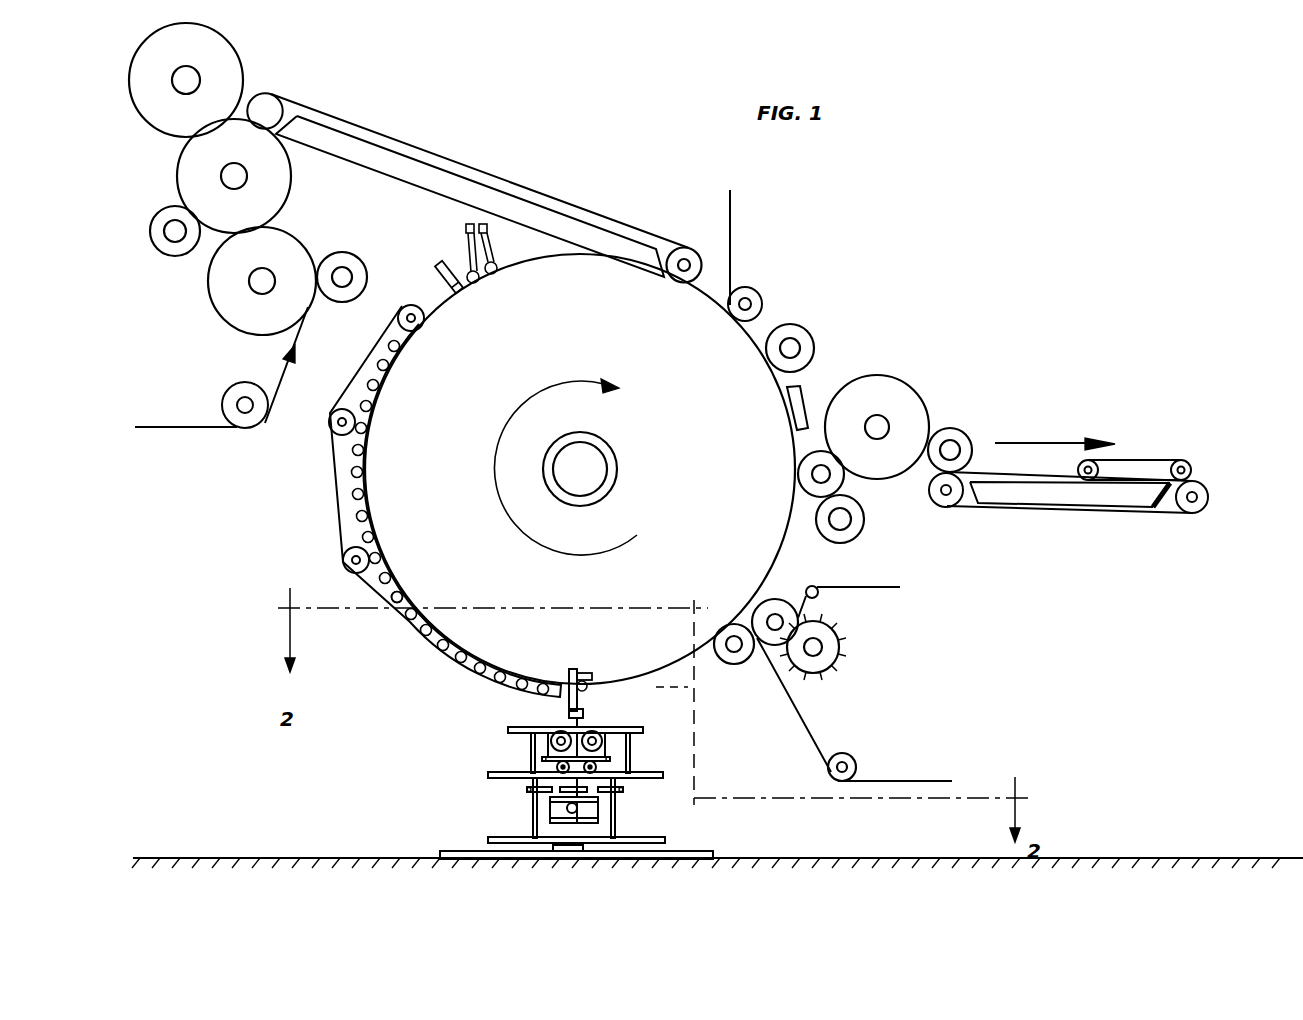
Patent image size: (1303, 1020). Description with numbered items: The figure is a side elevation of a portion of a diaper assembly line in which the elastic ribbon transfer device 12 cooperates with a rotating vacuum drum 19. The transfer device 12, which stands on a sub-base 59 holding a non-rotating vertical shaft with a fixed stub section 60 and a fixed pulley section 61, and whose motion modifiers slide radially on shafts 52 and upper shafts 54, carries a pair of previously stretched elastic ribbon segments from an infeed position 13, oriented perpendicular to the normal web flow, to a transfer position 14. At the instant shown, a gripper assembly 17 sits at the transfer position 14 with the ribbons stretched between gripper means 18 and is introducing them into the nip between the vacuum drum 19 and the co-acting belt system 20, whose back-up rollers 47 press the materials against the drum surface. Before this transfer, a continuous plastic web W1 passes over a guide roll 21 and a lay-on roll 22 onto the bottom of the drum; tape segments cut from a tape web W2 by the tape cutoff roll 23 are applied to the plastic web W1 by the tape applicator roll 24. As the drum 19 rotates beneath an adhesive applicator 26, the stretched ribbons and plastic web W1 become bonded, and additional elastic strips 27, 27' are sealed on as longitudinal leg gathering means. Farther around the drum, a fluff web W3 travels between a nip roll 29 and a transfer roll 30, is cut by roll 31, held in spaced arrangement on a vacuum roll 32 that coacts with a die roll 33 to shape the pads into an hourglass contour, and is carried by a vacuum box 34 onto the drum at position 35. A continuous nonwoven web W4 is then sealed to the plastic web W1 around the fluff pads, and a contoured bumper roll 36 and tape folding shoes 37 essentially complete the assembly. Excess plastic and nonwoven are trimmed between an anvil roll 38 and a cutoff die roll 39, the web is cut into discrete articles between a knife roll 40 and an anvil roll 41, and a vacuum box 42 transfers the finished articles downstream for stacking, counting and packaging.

The elastic ribbon transfer device 12 is at (487, 762).
The infeed position 13 is at (677, 692).
The transfer position 14 is at (567, 677).
The gripper assembly 17 is at (587, 685).
The gripper means 18 is at (585, 672).
The vacuum drum 19 is at (441, 499).
The belt system 20 is at (333, 478).
The guide roll 21 is at (843, 757).
The lay-on roll 22 is at (742, 655).
The tape cutoff roll 23 is at (833, 642).
The tape applicator roll 24 is at (775, 608).
The adhesive applicator 26 is at (436, 270).
The elastic strip 27 is at (446, 246).
The elastic strip 27' is at (507, 249).
The nip roll 29 is at (344, 262).
The transfer roll 30 is at (227, 286).
The cutting roll 31 is at (163, 245).
The vacuum roll 32 is at (270, 196).
The die roll 33 is at (225, 80).
The vacuum box 34 is at (458, 182).
The fluff transfer position 35 is at (637, 275).
The contoured bumper roll 36 is at (800, 337).
The tape folding shoes 37 is at (805, 402).
The anvil roll 38 is at (808, 472).
The cutoff die roll 39 is at (866, 524).
The knife roll 40 is at (905, 403).
The anvil roll 41 is at (958, 447).
The vacuum box 42 is at (1075, 490).
The rollers 47 is at (400, 598).
The shafts 52 is at (560, 737).
The upper shafts 54 is at (547, 763).
The sub-base 59 is at (463, 850).
The fixed stub section 60 is at (563, 850).
The fixed pulley section 61 is at (593, 792).
The plastic web W1 is at (898, 780).
The tape web W2 is at (877, 577).
The fluff web W3 is at (190, 427).
The nonwoven web W4 is at (731, 232).